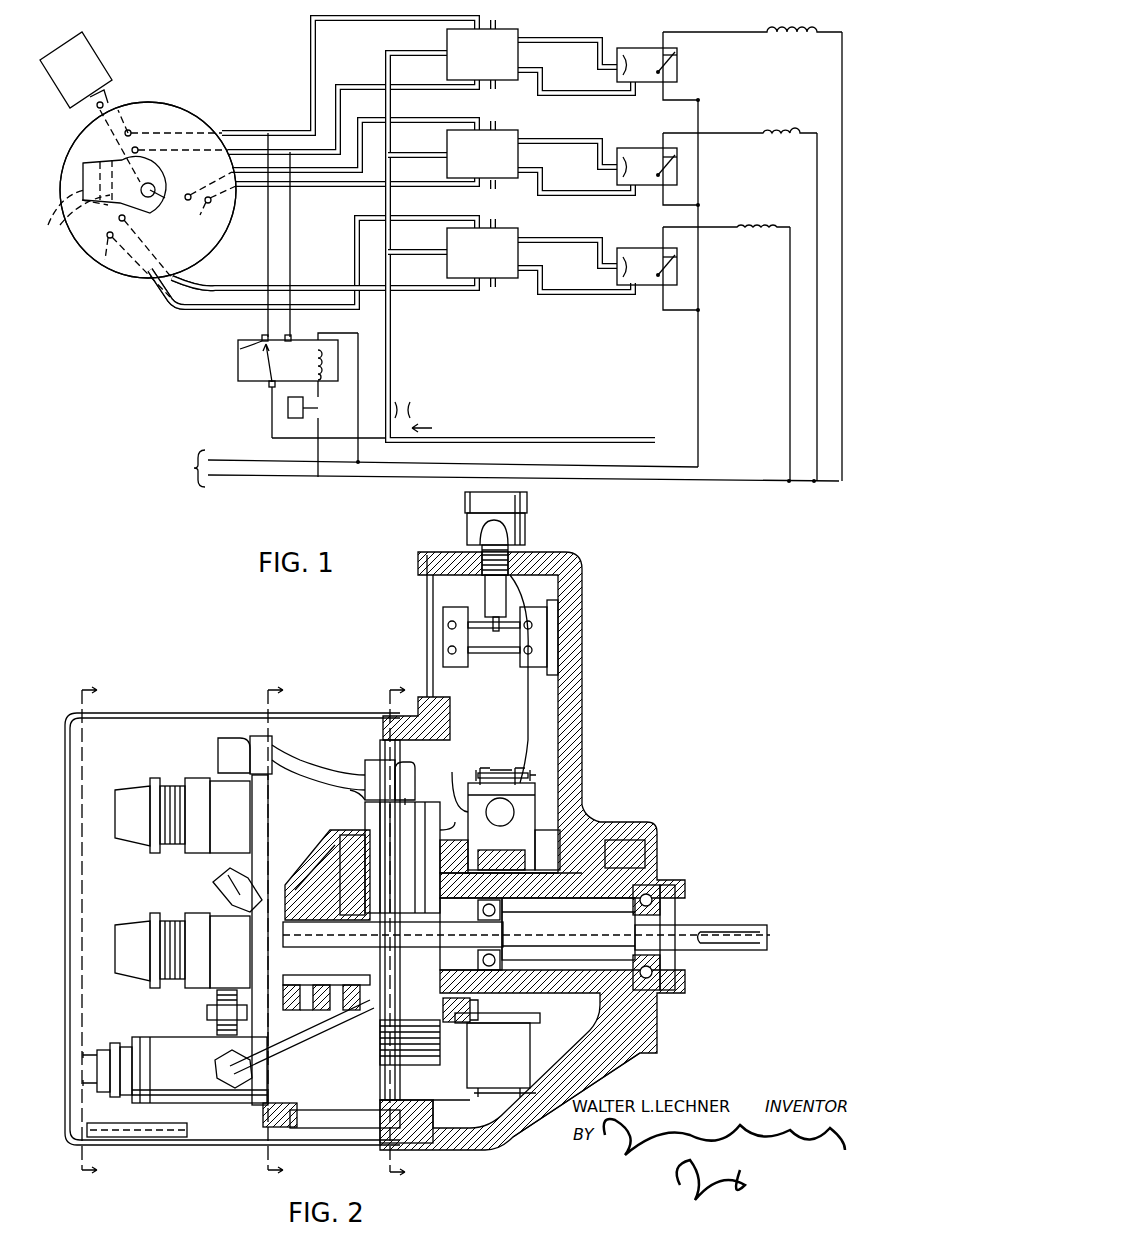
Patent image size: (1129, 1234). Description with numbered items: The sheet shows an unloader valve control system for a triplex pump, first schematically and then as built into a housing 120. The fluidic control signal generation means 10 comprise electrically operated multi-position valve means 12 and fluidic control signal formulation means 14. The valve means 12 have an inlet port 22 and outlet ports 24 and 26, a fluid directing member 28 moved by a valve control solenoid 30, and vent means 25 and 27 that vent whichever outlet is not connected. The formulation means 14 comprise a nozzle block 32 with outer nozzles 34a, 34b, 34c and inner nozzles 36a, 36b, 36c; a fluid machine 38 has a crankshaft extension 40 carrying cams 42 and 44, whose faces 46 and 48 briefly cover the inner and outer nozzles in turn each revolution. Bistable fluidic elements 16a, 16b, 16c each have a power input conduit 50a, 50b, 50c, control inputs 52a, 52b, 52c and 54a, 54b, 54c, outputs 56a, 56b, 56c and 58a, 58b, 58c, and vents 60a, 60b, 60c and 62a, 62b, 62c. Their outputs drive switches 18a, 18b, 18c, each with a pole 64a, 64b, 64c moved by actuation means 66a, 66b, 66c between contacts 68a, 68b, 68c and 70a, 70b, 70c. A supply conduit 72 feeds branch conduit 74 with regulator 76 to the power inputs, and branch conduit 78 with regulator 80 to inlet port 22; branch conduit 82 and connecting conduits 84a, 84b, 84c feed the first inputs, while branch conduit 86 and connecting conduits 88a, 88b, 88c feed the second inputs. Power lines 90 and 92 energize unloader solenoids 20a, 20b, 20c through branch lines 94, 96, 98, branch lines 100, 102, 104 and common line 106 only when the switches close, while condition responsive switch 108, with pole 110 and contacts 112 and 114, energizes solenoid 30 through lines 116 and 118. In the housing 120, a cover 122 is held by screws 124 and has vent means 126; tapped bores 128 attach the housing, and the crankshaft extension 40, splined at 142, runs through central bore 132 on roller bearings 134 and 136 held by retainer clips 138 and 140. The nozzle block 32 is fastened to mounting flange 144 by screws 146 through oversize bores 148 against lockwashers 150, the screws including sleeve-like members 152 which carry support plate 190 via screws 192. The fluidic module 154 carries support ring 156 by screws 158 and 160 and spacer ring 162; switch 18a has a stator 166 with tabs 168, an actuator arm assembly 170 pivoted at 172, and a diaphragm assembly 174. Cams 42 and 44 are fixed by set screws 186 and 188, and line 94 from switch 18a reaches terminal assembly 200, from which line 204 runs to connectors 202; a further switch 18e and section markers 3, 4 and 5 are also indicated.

In FIG. 1, the fluidic control signal generation means 10 is at (446, 358).
In FIG. 1, the multi-position control valve means 12 is at (230, 376).
In FIG. 2, the multi-position control valve means 12 is at (173, 1111).
In FIG. 1, the fluidic control signal formulation means 14 is at (90, 288).
In FIG. 1, the bistable fluidic element 16a is at (520, 55).
In FIG. 1, the bistable fluidic element 16b is at (520, 156).
In FIG. 1, the bistable fluidic element 16c is at (520, 254).
In FIG. 1, the electrical switch 18a is at (648, 46).
In FIG. 2, the electrical switch 18a is at (465, 740).
In FIG. 1, the electrical switch 18b is at (650, 146).
In FIG. 1, the electrical switch 18c is at (640, 248).
In FIG. 2, the switch 18e is at (505, 1085).
In FIG. 1, the unloader valve control solenoid 20a is at (792, 38).
In FIG. 1, the unloader valve control solenoid 20b is at (786, 130).
In FIG. 1, the unloader valve control solenoid 20c is at (760, 226).
In FIG. 1, the inlet port 22 is at (268, 384).
In FIG. 1, the outlet port 24 is at (260, 336).
In FIG. 1, the vent means 25 is at (240, 349).
In FIG. 1, the outlet port 26 is at (279, 328).
In FIG. 1, the vent means 27 is at (308, 333).
In FIG. 1, the fluid directing member 28 is at (268, 360).
In FIG. 1, the valve control solenoid 30 is at (313, 360).
In FIG. 1, the nozzle block 32 is at (178, 102).
In FIG. 2, the nozzle block 32 is at (352, 832).
In FIG. 1, the nozzle 34a is at (130, 128).
In FIG. 1, the nozzle 34b is at (206, 205).
In FIG. 1, the nozzle 34c is at (110, 240).
In FIG. 1, the nozzle 36a is at (133, 150).
In FIG. 1, the nozzle 36b is at (187, 194).
In FIG. 1, the nozzle 36c is at (107, 238).
In FIG. 1, the fluid machine 38 is at (97, 60).
In FIG. 1, the crankshaft extension 40 is at (97, 107).
In FIG. 2, the crankshaft extension 40 is at (590, 960).
In FIG. 1, the cam 42 is at (118, 208).
In FIG. 2, the cam 42 is at (319, 995).
In FIG. 1, the cam 44 is at (100, 172).
In FIG. 2, the cam 44 is at (324, 992).
In FIG. 1, the cam face 46 is at (105, 208).
In FIG. 2, the cam face 46 is at (340, 872).
In FIG. 1, the cam face 48 is at (60, 220).
In FIG. 2, the cam face 48 is at (325, 840).
In FIG. 1, the power signal input conduit 50a is at (422, 53).
In FIG. 1, the power signal input conduit 50b is at (428, 156).
In FIG. 1, the power signal input conduit 50c is at (422, 252).
In FIG. 1, the first control signal input conduit 52a is at (376, 22).
In FIG. 1, the first control signal input conduit 52b is at (432, 119).
In FIG. 1, the first control signal input conduit 52c is at (425, 219).
In FIG. 1, the second control signal input conduit 54a is at (462, 90).
In FIG. 1, the second control signal input conduit 54b is at (430, 188).
In FIG. 1, the second control signal input conduit 54c is at (447, 294).
In FIG. 1, the first control signal output conduit 56a is at (537, 80).
In FIG. 2, the first control signal output conduit 56a is at (450, 800).
In FIG. 1, the first control signal output conduit 56b is at (535, 180).
In FIG. 1, the first control signal output conduit 56c is at (528, 278).
In FIG. 1, the second control signal output conduit 58a is at (538, 40).
In FIG. 2, the second control signal output conduit 58a is at (440, 832).
In FIG. 1, the second control signal output conduit 58b is at (568, 140).
In FIG. 1, the second control signal output conduit 58c is at (555, 240).
In FIG. 1, the first vent means 60a is at (492, 85).
In FIG. 1, the first vent means 60b is at (492, 183).
In FIG. 1, the first vent means 60c is at (490, 285).
In FIG. 1, the second vent means 62a is at (493, 22).
In FIG. 1, the second vent means 62b is at (493, 124).
In FIG. 1, the second vent means 62c is at (492, 222).
In FIG. 1, the switch pole 64a is at (677, 60).
In FIG. 1, the switch pole 64b is at (677, 165).
In FIG. 1, the switch pole 64c is at (677, 275).
In FIG. 1, the switch actuation means 66a is at (618, 62).
In FIG. 1, the switch actuation means 66b is at (610, 165).
In FIG. 1, the switch actuation means 66c is at (614, 275).
In FIG. 1, the switch contact 68a is at (678, 50).
In FIG. 1, the switch contact 68b is at (678, 156).
In FIG. 1, the switch contact 68c is at (678, 258).
In FIG. 1, the switch contact 70a is at (665, 74).
In FIG. 1, the switch contact 70b is at (657, 178).
In FIG. 1, the switch contact 70c is at (660, 278).
In FIG. 2, the pressurized fluid supply conduit 72 is at (250, 884).
In FIG. 1, the branch conduit 74 is at (388, 103).
In FIG. 2, the branch conduit 74 is at (338, 765).
In FIG. 1, the pressure regulator means 76 is at (400, 412).
In FIG. 2, the pressure regulator means 76 is at (195, 858).
In FIG. 1, the branch conduit 78 is at (270, 432).
In FIG. 2, the branch conduit 78 is at (215, 1005).
In FIG. 1, the pressure regulator means 80 is at (265, 405).
In FIG. 2, the pressure regulator means 80 is at (192, 990).
In FIG. 1, the branch conduit 82 is at (270, 130).
In FIG. 1, the connecting conduit 84a is at (222, 128).
In FIG. 1, the connecting conduit 84b is at (247, 166).
In FIG. 1, the connecting conduit 84c is at (180, 311).
In FIG. 1, the branch conduit 86 is at (292, 158).
In FIG. 2, the branch conduit 86 is at (302, 1040).
In FIG. 1, the connecting conduit 88a is at (240, 148).
In FIG. 1, the connecting conduit 88b is at (250, 188).
In FIG. 1, the connecting conduit 88c is at (192, 283).
In FIG. 1, the electrical power input line 90 is at (412, 464).
In FIG. 1, the electrical power input line 92 is at (590, 482).
In FIG. 1, the branch line 94 is at (730, 32).
In FIG. 2, the branch line 94 is at (534, 730).
In FIG. 1, the branch line 96 is at (722, 134).
In FIG. 1, the branch line 98 is at (712, 230).
In FIG. 1, the branch line 100 is at (690, 102).
In FIG. 1, the branch line 102 is at (683, 205).
In FIG. 1, the branch line 104 is at (686, 318).
In FIG. 1, the common branch line 106 is at (700, 192).
In FIG. 1, the condition responsive switch 108 is at (292, 416).
In FIG. 1, the single pole 110 is at (318, 410).
In FIG. 1, the switch contact 112 is at (320, 392).
In FIG. 1, the switch contact 114 is at (320, 432).
In FIG. 1, the branch line 116 is at (358, 380).
In FIG. 2, the branch line 116 is at (92, 1050).
In FIG. 1, the branch line 118 is at (320, 477).
In FIG. 2, the housing 120 is at (584, 735).
In FIG. 2, the housing cover 122 is at (170, 712).
In FIG. 2, the attachment screws 124 is at (355, 706).
In FIG. 2, the vent means 126 is at (135, 1140).
In FIG. 2, the tapped bores 128 is at (655, 842).
In FIG. 2, the central bore 132 is at (592, 898).
In FIG. 2, the roller bearing 134 is at (645, 990).
In FIG. 2, the roller bearing 136 is at (500, 960).
In FIG. 2, the retainer clip 138 is at (470, 962).
In FIG. 2, the retainer clip 140 is at (678, 978).
In FIG. 2, the splines 142 is at (718, 924).
In FIG. 2, the interior mounting flange 144 is at (466, 1112).
In FIG. 2, the attachment screws 146 is at (400, 1068).
In FIG. 2, the oversize bores 148 is at (400, 1130).
In FIG. 2, the lockwashers 150 is at (378, 1050).
In FIG. 2, the sleeve-like attachment members 152 is at (318, 1130).
In FIG. 2, the bistable fluidic element module 154 is at (360, 808).
In FIG. 2, the support ring 156 is at (520, 905).
In FIG. 2, the attachment screw 158 is at (480, 1003).
In FIG. 2, the attachment screw 160 is at (402, 857).
In FIG. 2, the spacer ring 162 is at (470, 1023).
In FIG. 2, the stator 166 is at (536, 836).
In FIG. 2, the stator tabs 168 is at (536, 856).
In FIG. 2, the actuator arm assembly 170 is at (478, 765).
In FIG. 2, the pivot mounting 172 is at (512, 765).
In FIG. 2, the diaphragm assembly 174 is at (526, 770).
In FIG. 2, the set screw 186 is at (352, 1012).
In FIG. 2, the set screw 188 is at (297, 1014).
In FIG. 2, the support plate 190 is at (270, 1080).
In FIG. 2, the attachment screws 192 is at (262, 1115).
In FIG. 2, the electrical terminal assembly 200 is at (520, 655).
In FIG. 2, the electrical connectors 202 is at (527, 522).
In FIG. 2, the line 204 is at (525, 607).
In FIG. 2, the section line 3 is at (381, 928).
In FIG. 2, the section line 4 is at (264, 928).
In FIG. 2, the section line 5 is at (78, 928).